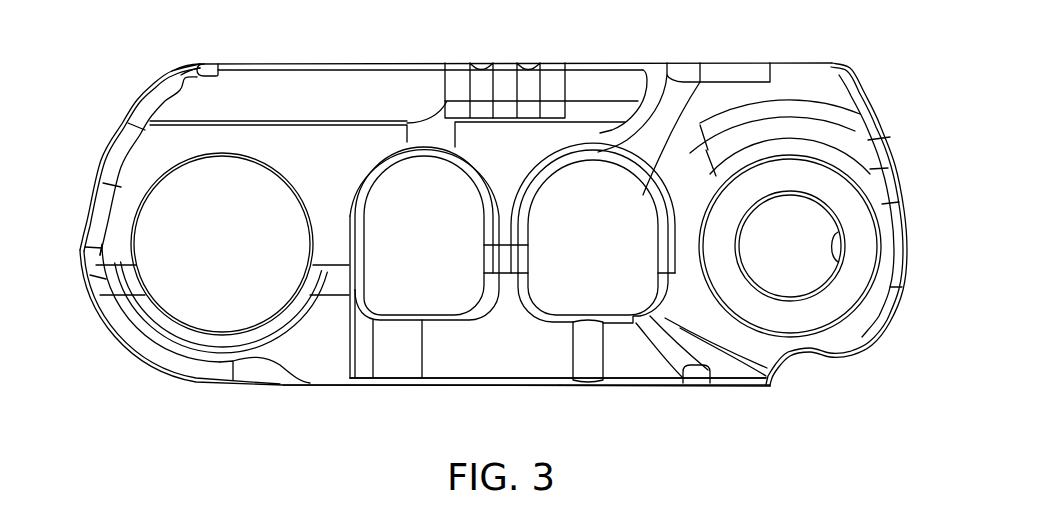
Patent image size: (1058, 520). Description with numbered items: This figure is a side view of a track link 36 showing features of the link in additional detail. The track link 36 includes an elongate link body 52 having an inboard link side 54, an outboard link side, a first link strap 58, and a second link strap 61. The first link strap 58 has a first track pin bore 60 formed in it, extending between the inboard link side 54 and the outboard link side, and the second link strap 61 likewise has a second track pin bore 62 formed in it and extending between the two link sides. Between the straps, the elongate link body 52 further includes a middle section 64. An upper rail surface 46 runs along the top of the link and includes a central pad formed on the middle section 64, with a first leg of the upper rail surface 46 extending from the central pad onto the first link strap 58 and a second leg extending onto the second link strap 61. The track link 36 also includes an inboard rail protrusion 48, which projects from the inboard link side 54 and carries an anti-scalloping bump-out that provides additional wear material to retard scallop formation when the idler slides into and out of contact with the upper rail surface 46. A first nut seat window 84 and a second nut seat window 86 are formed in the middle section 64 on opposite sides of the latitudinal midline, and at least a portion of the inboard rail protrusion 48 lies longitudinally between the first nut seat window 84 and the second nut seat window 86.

The track link 36 is at (793, 46).
The upper rail surface 46 is at (490, 58).
The inboard rail protrusion 48 is at (528, 78).
The elongate link body 52 is at (176, 63).
The inboard link side 54 is at (456, 365).
The first link strap 58 is at (881, 168).
The first track pin bore 60 is at (828, 243).
The second link strap 61 is at (95, 210).
The second track pin bore 62 is at (112, 277).
The middle section 64 is at (528, 368).
The first nut seat window 84 is at (655, 247).
The second nut seat window 86 is at (366, 246).